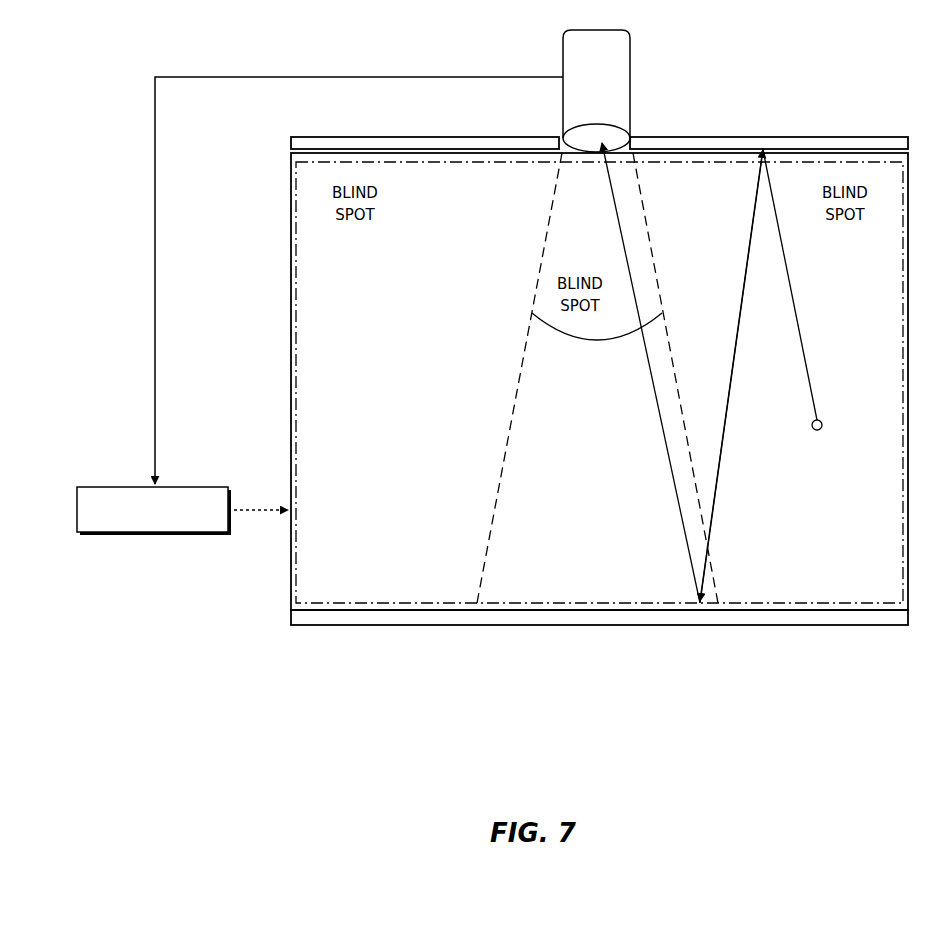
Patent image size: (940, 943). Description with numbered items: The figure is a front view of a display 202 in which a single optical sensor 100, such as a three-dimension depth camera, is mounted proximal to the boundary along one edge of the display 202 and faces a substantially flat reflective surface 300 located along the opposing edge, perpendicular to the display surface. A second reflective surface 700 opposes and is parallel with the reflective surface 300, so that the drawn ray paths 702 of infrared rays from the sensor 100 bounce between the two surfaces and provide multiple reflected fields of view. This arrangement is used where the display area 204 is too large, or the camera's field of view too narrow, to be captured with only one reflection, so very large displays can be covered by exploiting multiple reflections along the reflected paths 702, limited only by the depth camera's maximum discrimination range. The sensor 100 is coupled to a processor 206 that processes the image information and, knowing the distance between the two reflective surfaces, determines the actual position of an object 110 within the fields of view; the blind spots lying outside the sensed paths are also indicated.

The optical sensor 100 is at (631, 93).
The object 110 is at (823, 419).
The display 202 is at (291, 201).
The display area 204 is at (296, 264).
The processor 206 is at (168, 487).
The reflective surface 300 is at (700, 612).
The second reflective surface 700 is at (390, 137).
The signal path 702 is at (794, 302).